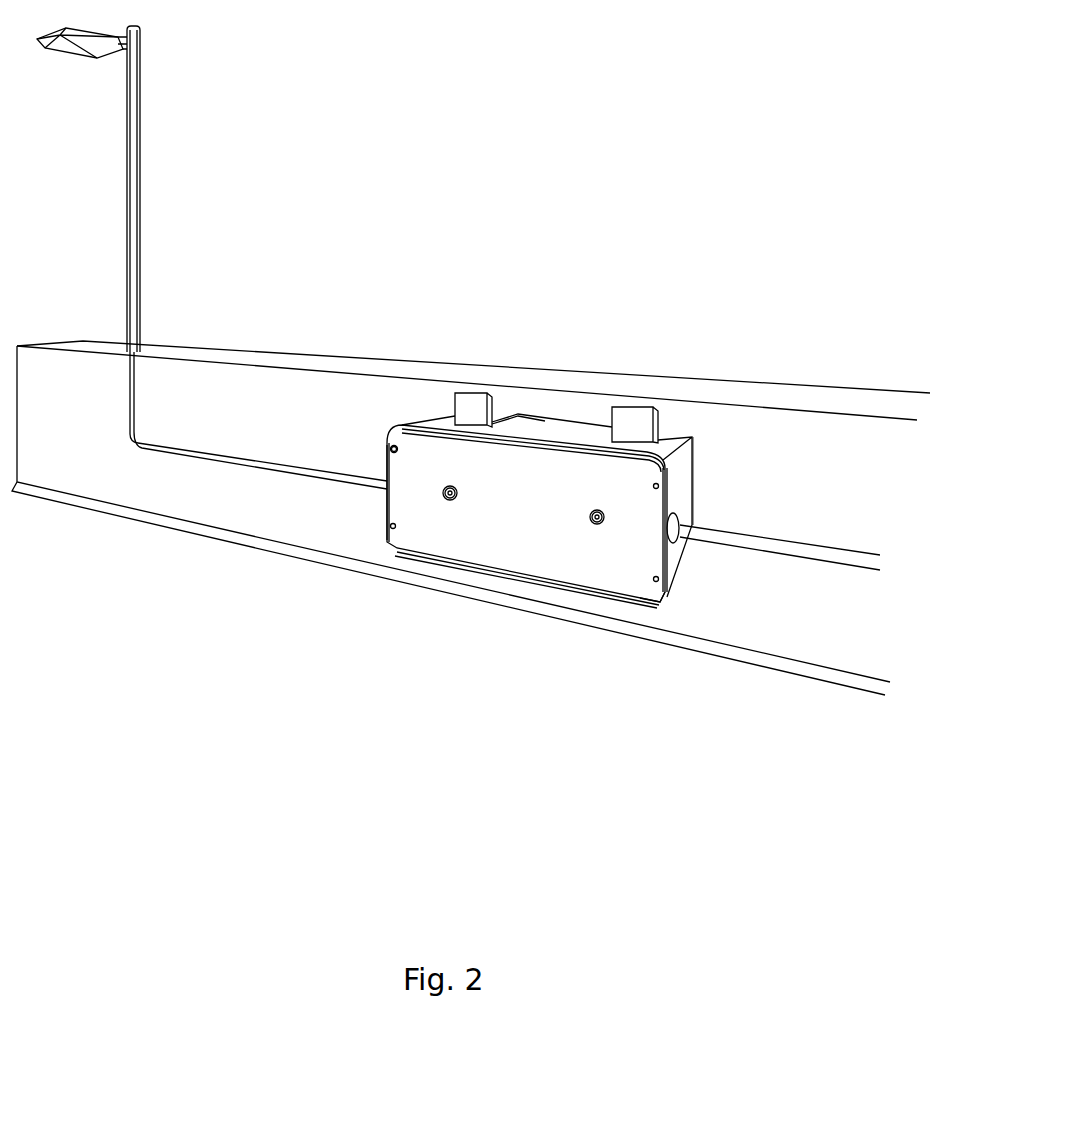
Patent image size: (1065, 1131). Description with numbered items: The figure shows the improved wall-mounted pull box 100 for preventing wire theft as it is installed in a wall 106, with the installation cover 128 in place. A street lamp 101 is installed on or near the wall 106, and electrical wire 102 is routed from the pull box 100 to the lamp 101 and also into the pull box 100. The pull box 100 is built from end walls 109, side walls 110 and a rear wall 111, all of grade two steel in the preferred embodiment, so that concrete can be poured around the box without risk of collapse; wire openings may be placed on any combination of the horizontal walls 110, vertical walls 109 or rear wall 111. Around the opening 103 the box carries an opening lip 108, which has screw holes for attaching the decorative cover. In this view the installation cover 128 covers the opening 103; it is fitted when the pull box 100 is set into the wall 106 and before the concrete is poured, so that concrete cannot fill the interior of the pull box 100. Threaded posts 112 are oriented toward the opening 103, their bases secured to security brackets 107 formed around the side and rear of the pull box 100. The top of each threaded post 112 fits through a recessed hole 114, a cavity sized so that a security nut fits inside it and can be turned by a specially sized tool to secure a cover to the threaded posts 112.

The pull box 100 is at (545, 398).
The street lamp 101 is at (140, 215).
The electrical wire 102 is at (247, 462).
The opening 103 is at (647, 594).
The wall 106 is at (77, 433).
The security brackets 107 is at (473, 398).
The opening lip 108 is at (392, 447).
The end walls 109 is at (680, 495).
The side walls 110 is at (560, 425).
The rear wall 111 is at (518, 412).
The threaded posts 112 is at (450, 502).
The recessed hole 114 is at (449, 488).
The installation cover 128 is at (508, 520).